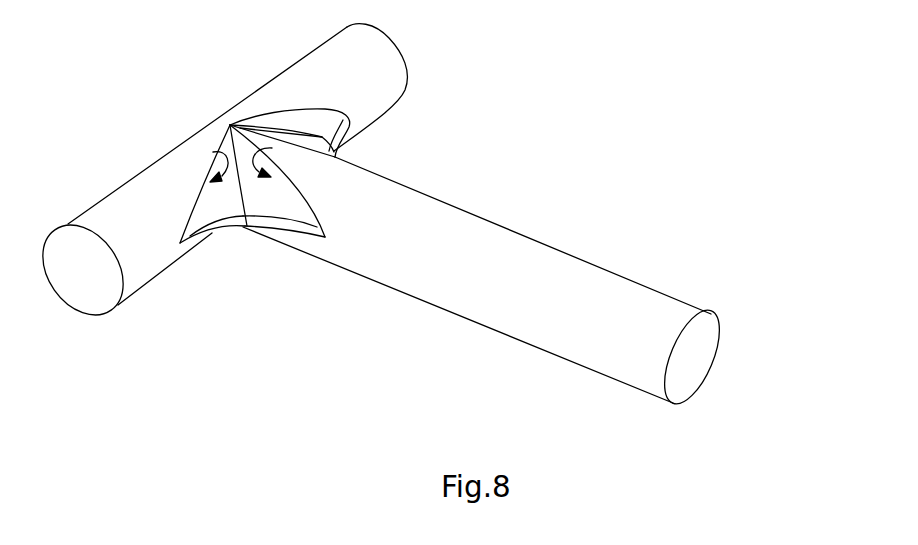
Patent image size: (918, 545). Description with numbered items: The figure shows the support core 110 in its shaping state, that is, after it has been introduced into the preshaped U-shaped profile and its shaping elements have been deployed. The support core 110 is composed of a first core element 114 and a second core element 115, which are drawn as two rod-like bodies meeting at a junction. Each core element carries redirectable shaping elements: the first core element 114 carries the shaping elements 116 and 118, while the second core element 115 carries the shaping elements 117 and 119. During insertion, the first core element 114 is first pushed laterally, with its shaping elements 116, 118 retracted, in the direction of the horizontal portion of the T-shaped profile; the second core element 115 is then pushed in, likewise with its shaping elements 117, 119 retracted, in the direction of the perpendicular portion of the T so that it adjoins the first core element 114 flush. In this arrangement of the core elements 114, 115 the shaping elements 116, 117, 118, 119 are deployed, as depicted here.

The support core 110 is at (378, 323).
The first core element 114 is at (140, 268).
The second core element 115 is at (533, 325).
The shaping element 116 is at (213, 226).
The shaping element 117 is at (287, 223).
The shaping element 118 is at (306, 116).
The shaping element 119 is at (283, 137).